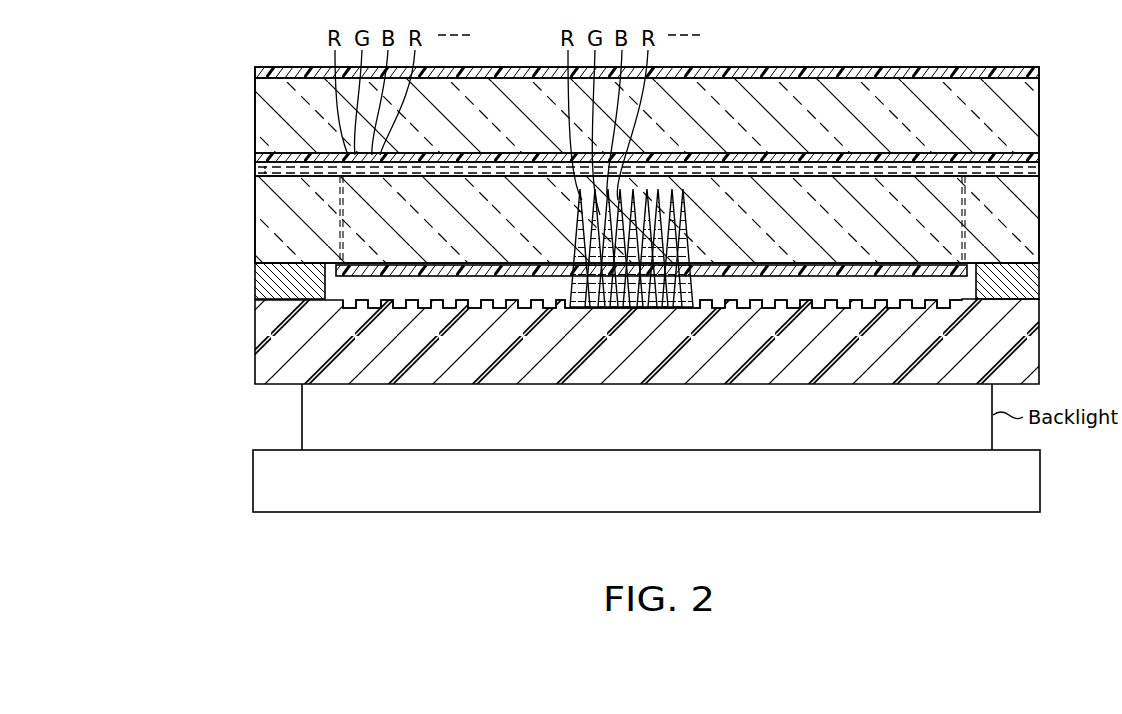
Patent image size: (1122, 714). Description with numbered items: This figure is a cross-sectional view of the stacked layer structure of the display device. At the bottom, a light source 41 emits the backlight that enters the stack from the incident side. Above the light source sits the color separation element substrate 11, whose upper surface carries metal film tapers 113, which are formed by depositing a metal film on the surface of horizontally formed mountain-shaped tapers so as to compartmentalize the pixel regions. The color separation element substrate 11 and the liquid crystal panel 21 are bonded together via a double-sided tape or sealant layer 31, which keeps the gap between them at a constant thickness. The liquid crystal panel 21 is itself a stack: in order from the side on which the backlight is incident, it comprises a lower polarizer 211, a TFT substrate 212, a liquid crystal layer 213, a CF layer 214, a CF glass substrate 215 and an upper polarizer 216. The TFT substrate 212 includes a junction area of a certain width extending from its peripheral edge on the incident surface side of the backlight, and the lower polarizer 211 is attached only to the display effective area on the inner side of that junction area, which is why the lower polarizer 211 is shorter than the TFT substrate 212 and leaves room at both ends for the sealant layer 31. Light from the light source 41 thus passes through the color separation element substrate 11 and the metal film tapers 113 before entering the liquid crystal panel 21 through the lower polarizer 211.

The liquid crystal panel 21 is at (1048, 65).
The upper polarizer 216 is at (255, 72).
The CF glass substrate 215 is at (255, 106).
The CF layer 214 is at (254, 157).
The liquid crystal layer 213 is at (270, 168).
The TFT substrate 212 is at (257, 221).
The lower polarizer 211 is at (873, 268).
The sealant layer 31 is at (257, 287).
The color separation element substrate 11 is at (1048, 299).
The metal film tapers 113 is at (502, 300).
The light source 41 is at (1040, 483).